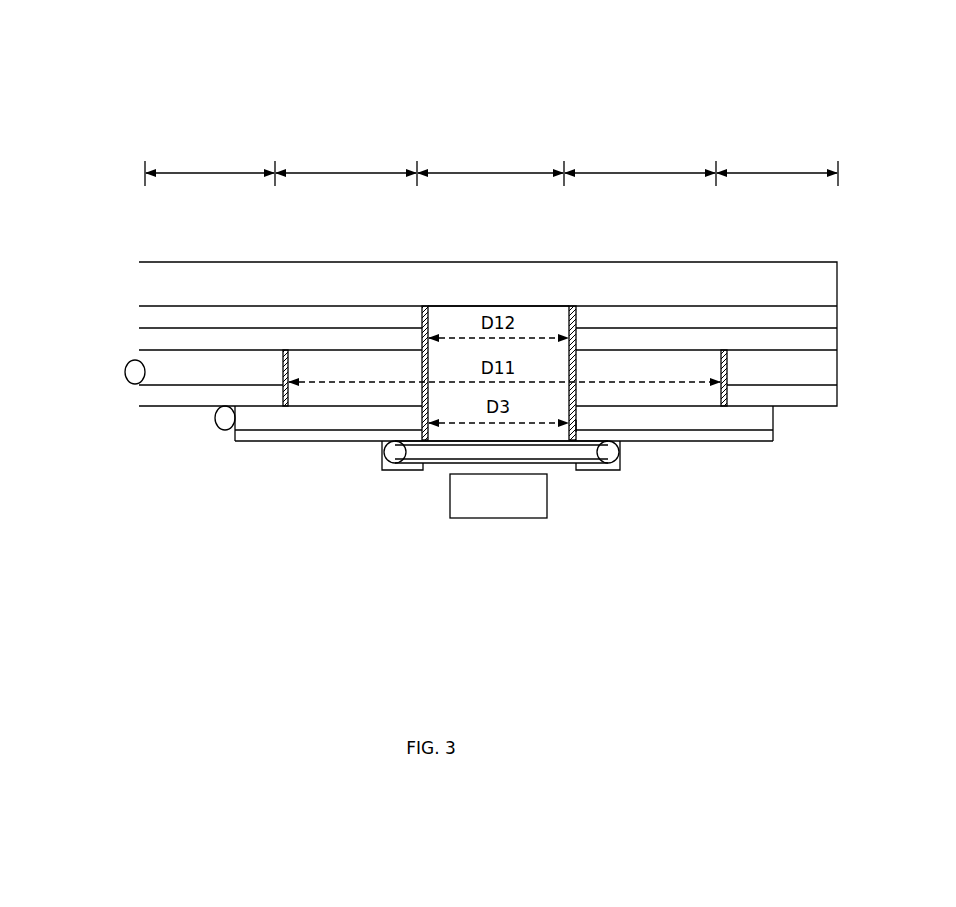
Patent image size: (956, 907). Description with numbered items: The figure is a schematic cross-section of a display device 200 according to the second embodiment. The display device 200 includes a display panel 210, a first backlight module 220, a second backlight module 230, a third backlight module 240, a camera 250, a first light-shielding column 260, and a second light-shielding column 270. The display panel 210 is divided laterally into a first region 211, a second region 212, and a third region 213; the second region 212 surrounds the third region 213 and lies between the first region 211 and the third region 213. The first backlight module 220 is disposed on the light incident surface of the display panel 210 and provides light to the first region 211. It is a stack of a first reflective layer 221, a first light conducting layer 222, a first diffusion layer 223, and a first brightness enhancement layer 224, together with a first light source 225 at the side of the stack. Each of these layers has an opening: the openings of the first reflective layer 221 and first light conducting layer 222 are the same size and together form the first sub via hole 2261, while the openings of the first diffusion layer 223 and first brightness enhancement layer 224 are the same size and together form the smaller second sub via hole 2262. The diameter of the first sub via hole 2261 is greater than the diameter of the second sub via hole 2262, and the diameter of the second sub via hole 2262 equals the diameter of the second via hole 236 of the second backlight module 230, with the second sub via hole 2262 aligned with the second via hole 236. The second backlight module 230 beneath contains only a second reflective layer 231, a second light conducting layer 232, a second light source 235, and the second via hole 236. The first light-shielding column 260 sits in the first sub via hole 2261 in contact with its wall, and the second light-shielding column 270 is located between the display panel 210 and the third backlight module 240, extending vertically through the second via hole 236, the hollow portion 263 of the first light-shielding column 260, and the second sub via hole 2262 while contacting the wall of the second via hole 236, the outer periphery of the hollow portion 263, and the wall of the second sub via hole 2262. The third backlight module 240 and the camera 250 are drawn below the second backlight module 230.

The display device 200 is at (129, 57).
The display panel 210 is at (837, 290).
The first region 211 is at (491, 160).
The second region 212 is at (495, 160).
The third region 213 is at (490, 160).
The first backlight module 220 is at (52, 293).
The first reflective layer 221 is at (139, 396).
The first light conducting layer 222 is at (150, 351).
The first diffusion layer 223 is at (139, 337).
The first brightness enhancement layer 224 is at (139, 313).
The first light source 225 is at (125, 372).
The first sub via hole 2261 is at (279, 369).
The second sub via hole 2262 is at (418, 321).
The second backlight module 230 is at (155, 438).
The second reflective layer 231 is at (255, 442).
The second light conducting layer 232 is at (250, 428).
The second light source 235 is at (220, 425).
The second via hole 236 is at (580, 419).
The third backlight module 240 is at (440, 463).
The camera 250 is at (510, 518).
The first light-shielding column 260 is at (662, 350).
The hollow portion 263 is at (578, 369).
The second light-shielding column 270 is at (543, 305).